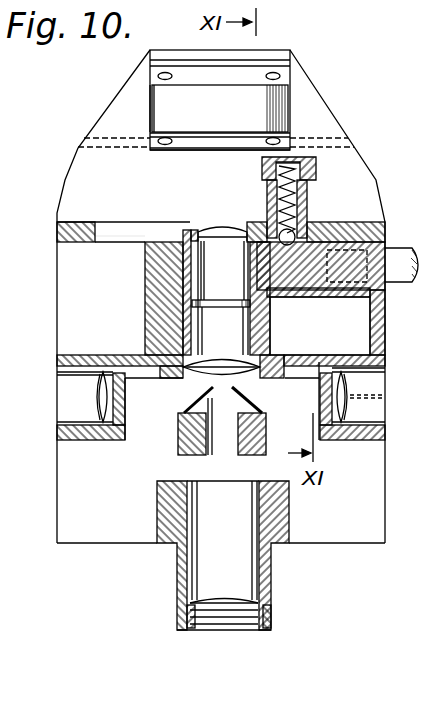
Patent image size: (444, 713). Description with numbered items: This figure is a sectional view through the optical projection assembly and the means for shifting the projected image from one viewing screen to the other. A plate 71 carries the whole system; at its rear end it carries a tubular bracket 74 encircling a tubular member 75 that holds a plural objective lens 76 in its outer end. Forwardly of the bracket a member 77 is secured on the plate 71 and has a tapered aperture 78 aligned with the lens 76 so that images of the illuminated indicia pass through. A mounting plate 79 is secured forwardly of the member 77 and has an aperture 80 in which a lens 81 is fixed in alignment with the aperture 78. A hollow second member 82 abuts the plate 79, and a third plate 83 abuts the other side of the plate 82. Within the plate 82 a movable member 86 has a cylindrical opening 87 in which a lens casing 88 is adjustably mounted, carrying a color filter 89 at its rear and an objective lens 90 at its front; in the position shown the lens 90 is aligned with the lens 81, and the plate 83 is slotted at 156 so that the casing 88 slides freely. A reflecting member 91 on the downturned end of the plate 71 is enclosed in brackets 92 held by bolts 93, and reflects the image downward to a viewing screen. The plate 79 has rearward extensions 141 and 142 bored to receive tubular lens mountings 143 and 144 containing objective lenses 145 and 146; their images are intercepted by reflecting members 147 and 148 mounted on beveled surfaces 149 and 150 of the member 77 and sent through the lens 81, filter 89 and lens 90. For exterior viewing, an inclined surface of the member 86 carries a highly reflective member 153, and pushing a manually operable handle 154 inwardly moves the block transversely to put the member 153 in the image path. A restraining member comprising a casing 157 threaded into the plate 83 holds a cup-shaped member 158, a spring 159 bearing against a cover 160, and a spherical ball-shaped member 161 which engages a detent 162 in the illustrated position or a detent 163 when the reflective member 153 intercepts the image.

The plate 71 is at (382, 532).
The tubular bracket 74 is at (157, 513).
The tubular member 75 is at (274, 568).
The plural objective lens 76 is at (231, 616).
The member 77 is at (178, 452).
The tapered aperture 78 is at (232, 449).
The mounting plate 79 is at (386, 357).
The aperture 80 is at (256, 378).
The lens 81 is at (210, 353).
The second member 82 is at (46, 300).
The third plate 83 is at (55, 227).
The member 86 is at (388, 323).
The cylindrical opening 87 is at (249, 323).
The lens casing 88 is at (180, 266).
The color filter 89 is at (232, 297).
The objective lens 90 is at (229, 224).
The reflecting member 91 is at (278, 98).
The brackets 92 is at (150, 93).
The bolts 93 is at (177, 144).
The rearward extension 141 is at (57, 442).
The rearward extension 142 is at (380, 440).
The tubular lens mounting 143 is at (58, 428).
The tubular lens mounting 144 is at (387, 428).
The objective lens 145 is at (116, 398).
The objective lens 146 is at (386, 393).
The reflecting member 147 is at (200, 387).
The reflecting member 148 is at (258, 400).
The beveled surface 149 is at (182, 417).
The beveled surface 150 is at (268, 423).
The reflective member 153 is at (385, 293).
The manually operable handle 154 is at (409, 258).
The slot 156 is at (150, 228).
The casing 157 is at (296, 176).
The cup-shaped member 158 is at (308, 185).
The spring 159 is at (291, 166).
The cover 160 is at (257, 158).
The spherical ball-shaped member 161 is at (323, 232).
The detent 162 is at (362, 293).
The detent 163 is at (383, 219).